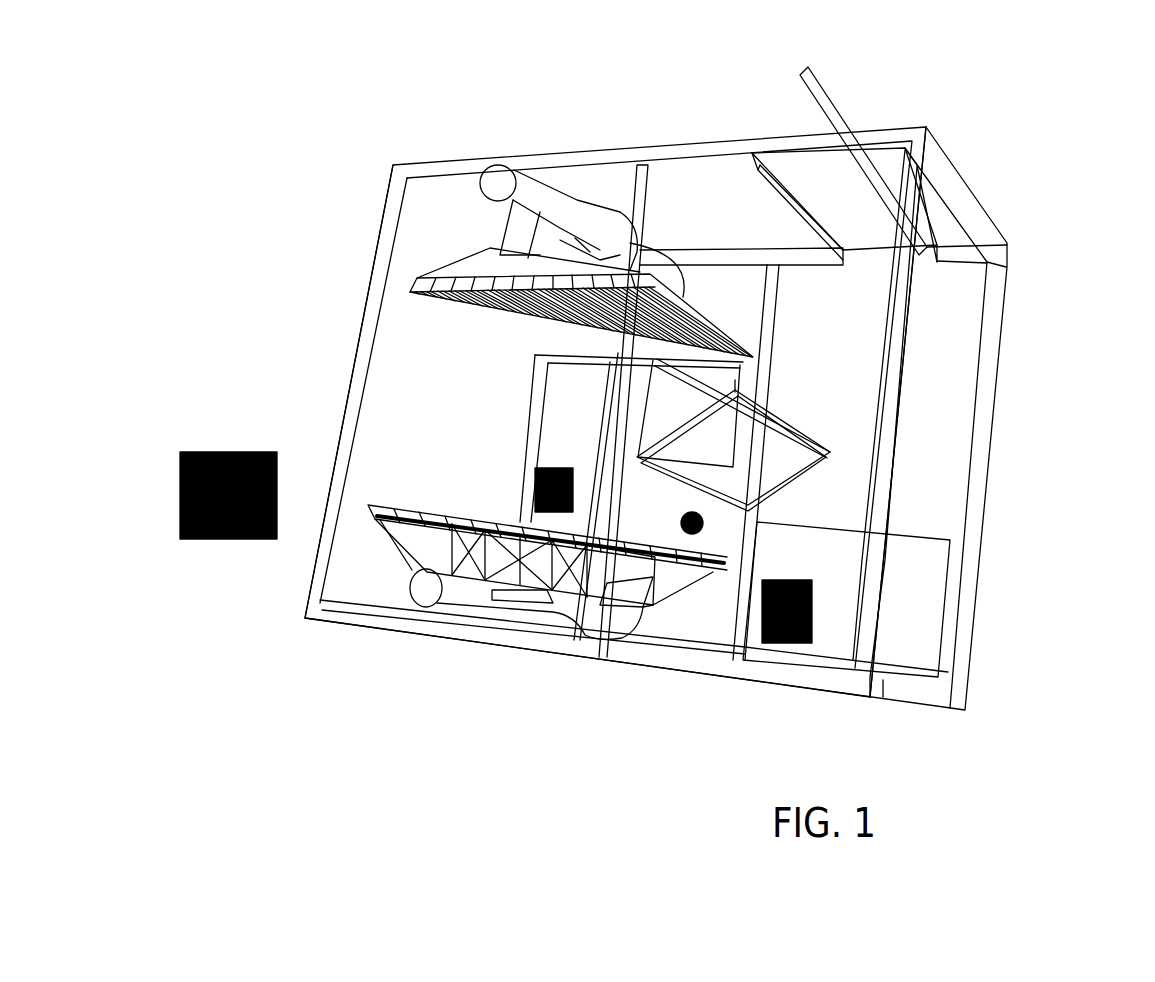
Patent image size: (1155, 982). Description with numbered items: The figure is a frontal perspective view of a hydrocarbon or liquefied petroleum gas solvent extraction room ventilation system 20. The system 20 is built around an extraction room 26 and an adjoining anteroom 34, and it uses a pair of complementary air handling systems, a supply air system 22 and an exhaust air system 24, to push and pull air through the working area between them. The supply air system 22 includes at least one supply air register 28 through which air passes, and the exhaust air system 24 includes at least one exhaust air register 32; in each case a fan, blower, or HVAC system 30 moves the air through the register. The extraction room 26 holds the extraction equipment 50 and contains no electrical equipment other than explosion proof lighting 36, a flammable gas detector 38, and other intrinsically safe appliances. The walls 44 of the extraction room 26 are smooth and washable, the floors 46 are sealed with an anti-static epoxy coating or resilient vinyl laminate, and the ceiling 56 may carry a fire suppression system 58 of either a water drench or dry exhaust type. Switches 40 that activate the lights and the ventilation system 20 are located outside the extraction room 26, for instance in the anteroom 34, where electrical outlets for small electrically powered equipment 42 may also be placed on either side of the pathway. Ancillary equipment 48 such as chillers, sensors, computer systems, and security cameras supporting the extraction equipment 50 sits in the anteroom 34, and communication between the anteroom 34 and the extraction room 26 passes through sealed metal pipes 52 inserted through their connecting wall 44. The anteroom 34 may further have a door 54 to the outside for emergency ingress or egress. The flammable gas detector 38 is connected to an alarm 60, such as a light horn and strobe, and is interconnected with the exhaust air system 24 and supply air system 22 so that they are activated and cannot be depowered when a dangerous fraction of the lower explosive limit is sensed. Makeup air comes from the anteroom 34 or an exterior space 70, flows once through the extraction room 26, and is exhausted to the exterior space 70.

The extraction room ventilation system 20 is at (288, 146).
The supply air system 22 is at (507, 133).
The exhaust air system 24 is at (481, 662).
The extraction room 26 is at (495, 438).
The supply air register 28 is at (591, 370).
The fan, blower, or HVAC system 30 is at (222, 436).
The exhaust air register 32 is at (488, 530).
The anteroom 34 is at (689, 412).
The explosion proof lighting 36 is at (402, 452).
The flammable gas detector 38 is at (418, 358).
The switches 40 is at (830, 205).
The electrical outlets for small electrically powered equipment 42 is at (947, 333).
The walls 44 is at (355, 302).
The floors 46 is at (928, 463).
The ancillary equipment 48 is at (788, 648).
The extraction equipment 50 is at (559, 465).
The sealed metal pipes 52 is at (691, 535).
The door 54 is at (702, 420).
The ceiling 56 is at (345, 362).
The fire suppression system 58 is at (432, 235).
The alarm 60 is at (945, 413).
The exterior space 70 is at (1105, 268).